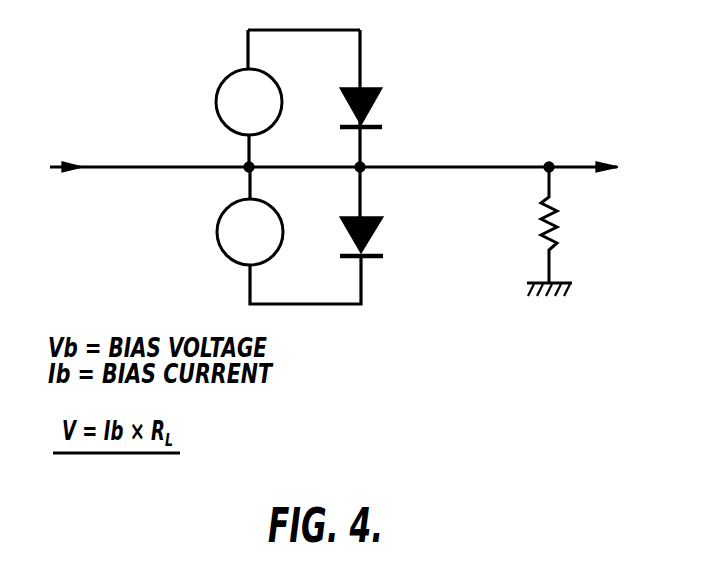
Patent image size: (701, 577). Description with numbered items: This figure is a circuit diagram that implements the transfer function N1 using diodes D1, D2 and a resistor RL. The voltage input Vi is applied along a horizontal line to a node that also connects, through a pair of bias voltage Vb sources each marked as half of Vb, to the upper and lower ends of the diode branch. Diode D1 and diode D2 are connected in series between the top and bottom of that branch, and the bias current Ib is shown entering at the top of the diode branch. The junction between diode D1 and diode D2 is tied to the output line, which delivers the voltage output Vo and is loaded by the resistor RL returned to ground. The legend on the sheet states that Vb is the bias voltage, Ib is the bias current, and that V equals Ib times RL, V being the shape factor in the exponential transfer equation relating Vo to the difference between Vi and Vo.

The bias voltage Vb is at (266, 103).
The diode D1 is at (377, 98).
The diode D2 is at (378, 211).
The resistor RL is at (558, 231).
The voltage input Vi is at (32, 169).
The voltage output Vo is at (635, 169).
The bias current Ib is at (384, 45).